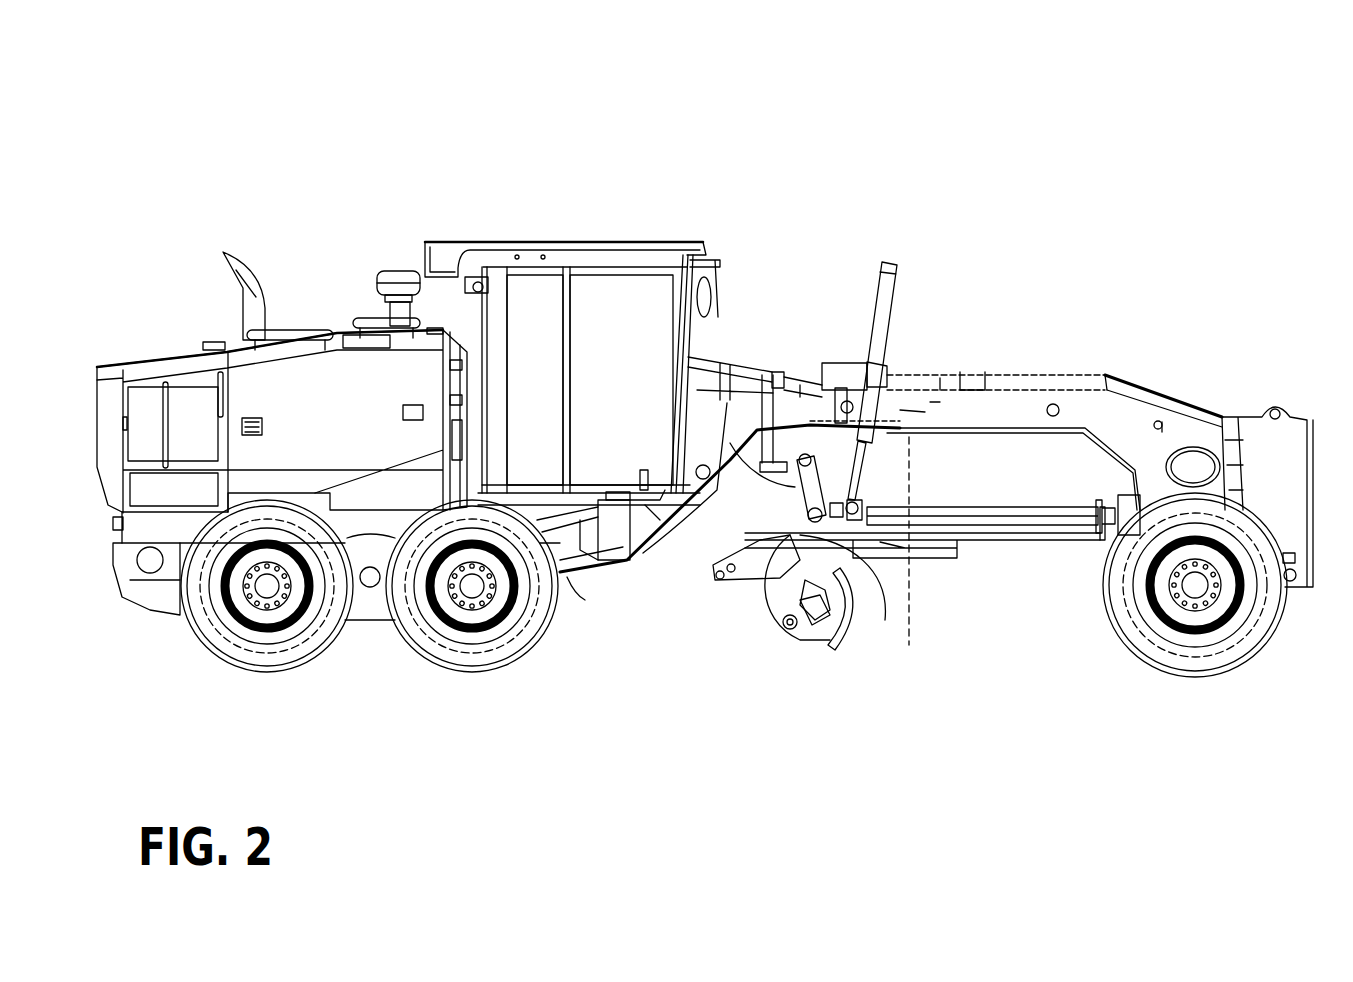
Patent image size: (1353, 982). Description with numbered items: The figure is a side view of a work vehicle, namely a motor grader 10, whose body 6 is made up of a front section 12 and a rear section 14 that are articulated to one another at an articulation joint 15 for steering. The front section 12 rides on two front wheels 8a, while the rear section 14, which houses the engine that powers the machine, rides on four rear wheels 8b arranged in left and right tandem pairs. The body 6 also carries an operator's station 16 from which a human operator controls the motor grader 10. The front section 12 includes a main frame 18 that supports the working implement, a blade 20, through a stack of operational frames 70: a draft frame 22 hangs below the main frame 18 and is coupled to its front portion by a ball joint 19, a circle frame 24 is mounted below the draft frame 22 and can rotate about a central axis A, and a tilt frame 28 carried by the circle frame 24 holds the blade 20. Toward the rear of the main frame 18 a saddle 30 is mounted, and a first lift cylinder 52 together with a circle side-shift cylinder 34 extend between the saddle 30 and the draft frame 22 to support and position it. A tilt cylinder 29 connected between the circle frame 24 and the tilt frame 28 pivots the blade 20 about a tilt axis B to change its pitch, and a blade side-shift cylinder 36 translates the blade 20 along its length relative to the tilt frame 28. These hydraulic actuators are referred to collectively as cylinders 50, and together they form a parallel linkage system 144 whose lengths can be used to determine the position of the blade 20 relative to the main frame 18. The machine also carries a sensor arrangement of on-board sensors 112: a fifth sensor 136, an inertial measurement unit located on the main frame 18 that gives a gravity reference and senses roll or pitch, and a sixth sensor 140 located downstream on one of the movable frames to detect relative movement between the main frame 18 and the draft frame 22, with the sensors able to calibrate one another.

The motor grader 10 is at (1068, 170).
The rear section 14 is at (128, 320).
The operator's station 16 is at (599, 240).
The body 6 is at (724, 232).
The front section 12 is at (1205, 327).
The main frame 18 is at (1188, 406).
The ball joint 19 is at (1125, 505).
The articulation joint 15 is at (731, 352).
The saddle 30 is at (842, 380).
The cylinders 50 is at (839, 505).
The first lift cylinder 52 is at (888, 312).
The circle side-shift cylinder 34 is at (727, 403).
The tilt cylinder 29 is at (743, 573).
The blade side-shift cylinder 36 is at (823, 680).
The operational frames 70 is at (870, 582).
The draft frame 22 is at (1053, 533).
The circle frame 24 is at (940, 553).
The tilt frame 28 is at (717, 550).
The blade 20 is at (847, 580).
The parallel linkage system 144 is at (884, 470).
The sixth sensor 140 is at (863, 464).
The sensors 112 is at (1057, 404).
The fifth sensor 136 is at (643, 553).
The front wheels 8a is at (1247, 653).
The rear wheels 8b is at (218, 660).
The central axis A is at (910, 592).
The tilt axis B is at (797, 625).